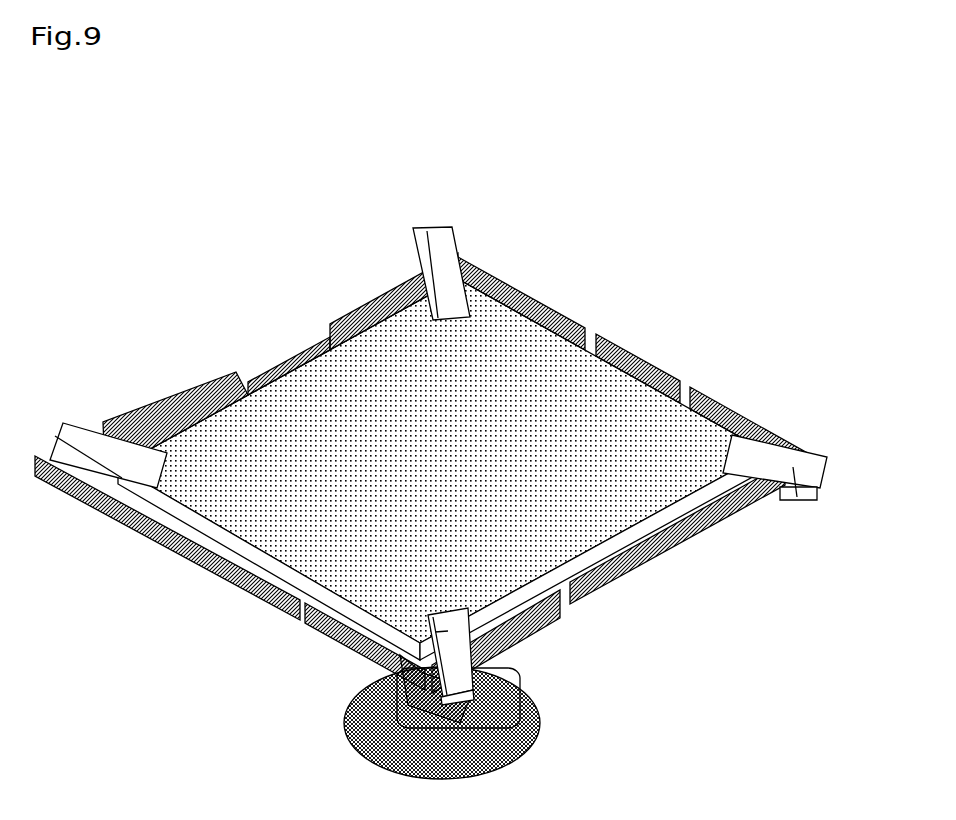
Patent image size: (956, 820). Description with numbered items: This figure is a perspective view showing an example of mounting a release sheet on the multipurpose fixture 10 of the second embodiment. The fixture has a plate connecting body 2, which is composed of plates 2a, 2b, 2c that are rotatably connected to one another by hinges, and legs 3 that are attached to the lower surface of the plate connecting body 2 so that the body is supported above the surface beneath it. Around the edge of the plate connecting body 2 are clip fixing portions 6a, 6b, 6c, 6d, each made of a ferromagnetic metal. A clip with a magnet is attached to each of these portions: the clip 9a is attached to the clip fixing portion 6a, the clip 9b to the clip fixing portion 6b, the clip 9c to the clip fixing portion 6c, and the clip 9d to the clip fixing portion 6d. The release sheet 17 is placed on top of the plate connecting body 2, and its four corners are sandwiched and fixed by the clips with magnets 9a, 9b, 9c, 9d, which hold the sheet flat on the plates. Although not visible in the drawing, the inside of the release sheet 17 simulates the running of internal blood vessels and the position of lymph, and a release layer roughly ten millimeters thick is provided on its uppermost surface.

The multipurpose fixture 10 is at (799, 156).
The plate connecting body 2 is at (651, 329).
The plate 2a is at (522, 280).
The plate 2b is at (628, 342).
The plate 2c is at (754, 402).
The legs 3 is at (520, 731).
The clip fixing portion 6a is at (375, 281).
The clip fixing portion 6b is at (47, 488).
The clip fixing portion 6c is at (766, 543).
The clip fixing portion 6d is at (543, 660).
The clip with magnet 9a is at (437, 264).
The clip with magnet 9b is at (107, 447).
The clip with magnet 9c is at (800, 495).
The clip with magnet 9d is at (366, 655).
The release sheet 17 is at (378, 430).